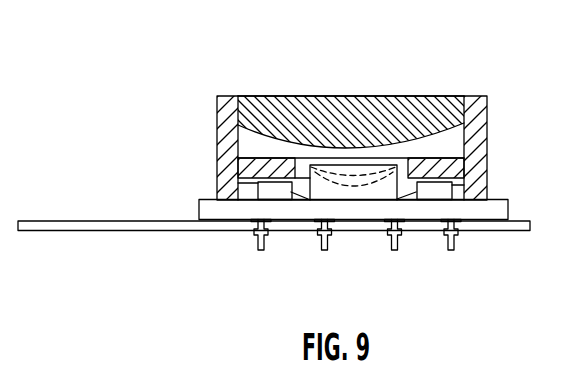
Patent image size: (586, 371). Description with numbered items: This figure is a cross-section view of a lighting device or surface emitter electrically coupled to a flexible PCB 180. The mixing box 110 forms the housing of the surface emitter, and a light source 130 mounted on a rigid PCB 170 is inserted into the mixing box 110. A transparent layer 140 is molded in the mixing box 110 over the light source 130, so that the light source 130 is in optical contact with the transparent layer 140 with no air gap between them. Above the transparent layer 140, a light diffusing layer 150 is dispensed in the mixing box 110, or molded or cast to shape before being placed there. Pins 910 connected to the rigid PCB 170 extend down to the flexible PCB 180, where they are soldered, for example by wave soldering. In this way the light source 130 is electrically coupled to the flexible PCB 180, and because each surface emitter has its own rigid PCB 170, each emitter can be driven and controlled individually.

The mixing box 110 is at (223, 147).
The light source 130 is at (352, 183).
The transparent layer 140 is at (443, 143).
The light diffusing layer 150 is at (318, 113).
The rigid PCB 170 is at (412, 210).
The flexible PCB 180 is at (128, 232).
The pins 910 is at (453, 240).